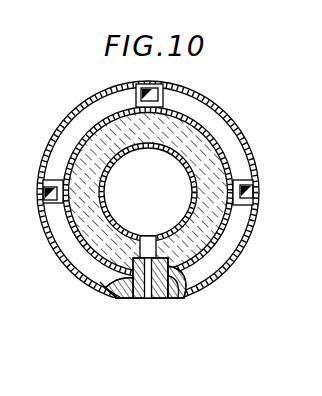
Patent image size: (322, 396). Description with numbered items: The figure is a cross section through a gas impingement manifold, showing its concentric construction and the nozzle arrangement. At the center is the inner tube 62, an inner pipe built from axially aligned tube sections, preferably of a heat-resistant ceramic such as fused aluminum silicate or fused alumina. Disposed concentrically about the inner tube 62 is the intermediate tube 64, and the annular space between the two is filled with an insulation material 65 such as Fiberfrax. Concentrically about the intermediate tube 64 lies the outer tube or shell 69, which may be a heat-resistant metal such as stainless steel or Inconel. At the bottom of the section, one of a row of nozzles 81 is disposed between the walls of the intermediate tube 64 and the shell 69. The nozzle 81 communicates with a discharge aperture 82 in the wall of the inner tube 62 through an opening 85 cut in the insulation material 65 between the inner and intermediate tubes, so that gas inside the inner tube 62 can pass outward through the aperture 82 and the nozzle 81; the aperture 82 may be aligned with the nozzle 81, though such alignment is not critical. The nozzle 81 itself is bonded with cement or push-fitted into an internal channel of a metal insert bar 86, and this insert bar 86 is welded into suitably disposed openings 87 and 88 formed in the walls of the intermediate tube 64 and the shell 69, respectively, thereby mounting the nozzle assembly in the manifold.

The inner tube 62 is at (179, 165).
The intermediate tube 64 is at (200, 127).
The insulation material 65 is at (202, 157).
The outer tube or shell 69 is at (257, 161).
The nozzles 81 is at (150, 299).
The discharge apertures 82 is at (146, 236).
The opening in the insulation 85 is at (172, 263).
The metal insert bar 86 is at (114, 291).
The opening in the intermediate tube wall 87 is at (183, 291).
The opening in the shell wall 88 is at (123, 299).